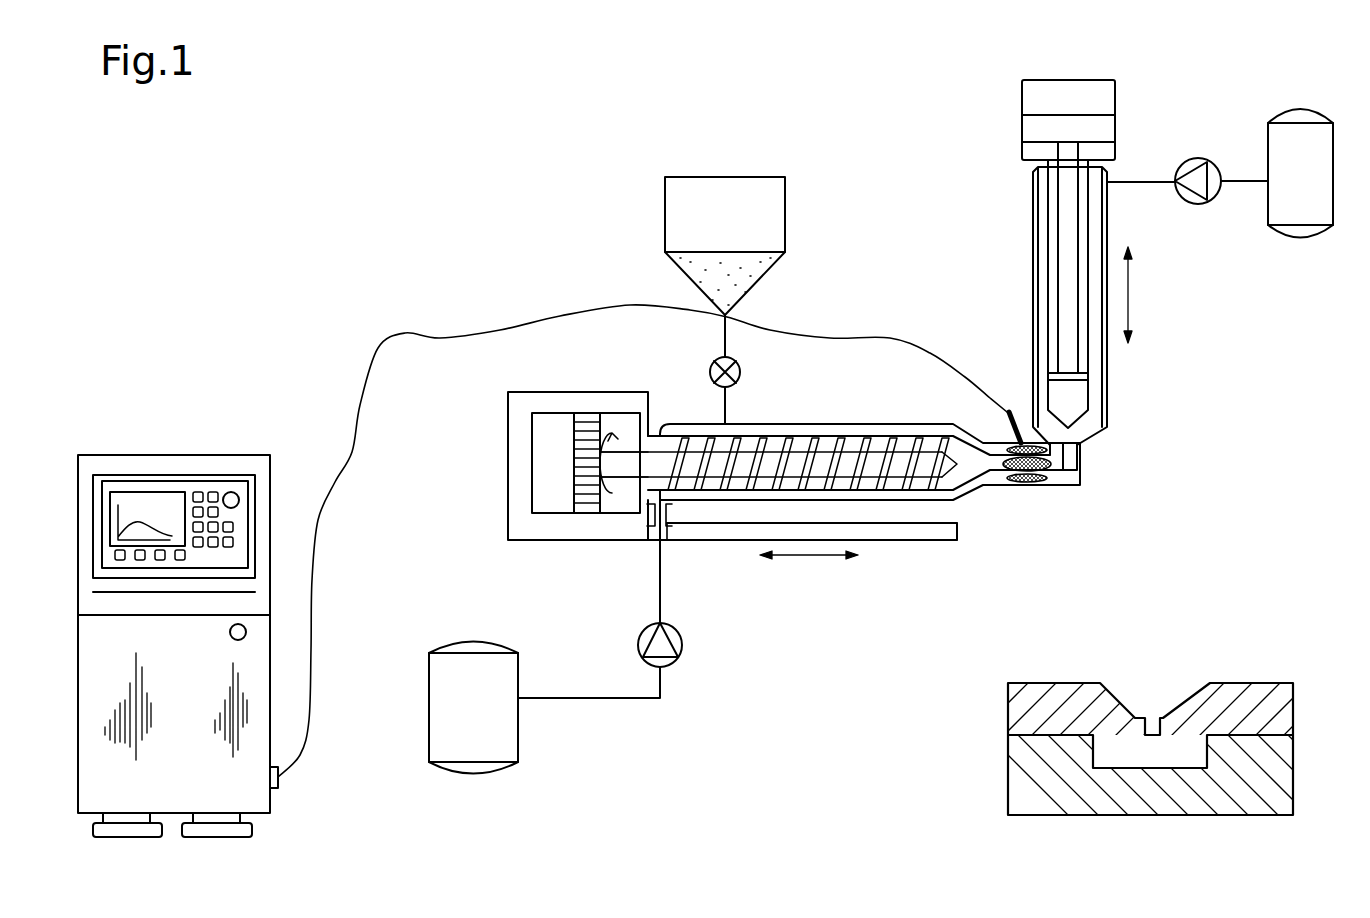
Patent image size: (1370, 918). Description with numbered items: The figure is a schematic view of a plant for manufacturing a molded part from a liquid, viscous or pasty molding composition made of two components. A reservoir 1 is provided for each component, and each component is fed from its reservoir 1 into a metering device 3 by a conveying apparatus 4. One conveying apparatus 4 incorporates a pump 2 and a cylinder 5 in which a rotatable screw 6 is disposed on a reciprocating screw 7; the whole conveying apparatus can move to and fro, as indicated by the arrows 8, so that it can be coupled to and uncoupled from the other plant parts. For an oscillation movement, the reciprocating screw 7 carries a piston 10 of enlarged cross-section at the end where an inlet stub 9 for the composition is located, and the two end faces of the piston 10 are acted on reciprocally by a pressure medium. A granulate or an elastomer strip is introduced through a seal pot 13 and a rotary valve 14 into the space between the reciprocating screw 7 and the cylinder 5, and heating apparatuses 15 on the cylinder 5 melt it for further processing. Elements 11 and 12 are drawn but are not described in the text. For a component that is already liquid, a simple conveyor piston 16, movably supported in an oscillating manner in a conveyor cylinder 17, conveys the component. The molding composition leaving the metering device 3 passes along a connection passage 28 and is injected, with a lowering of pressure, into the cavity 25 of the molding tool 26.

The reservoir 1 is at (1318, 137).
The pump 2 is at (1205, 160).
The metering device 3 is at (1030, 487).
The conveying apparatus 4 is at (712, 508).
The cylinder 5 is at (792, 447).
The screw 6 is at (843, 438).
The reciprocating screw 7 is at (928, 470).
The arrows 8 is at (818, 560).
The inlet stub 9 is at (652, 522).
The piston 10 is at (586, 420).
The drive motor 11 is at (577, 445).
The rotary drive 12 is at (605, 425).
The seal pot 13 is at (690, 258).
The rotary valve 14 is at (740, 362).
The heating apparatuses 15 is at (900, 423).
The conveyor piston 16 is at (1065, 273).
The conveyor cylinder 17 is at (1047, 308).
The cavity 25 is at (1170, 748).
The molding tool 26 is at (1119, 715).
The connection passage 28 is at (1073, 460).